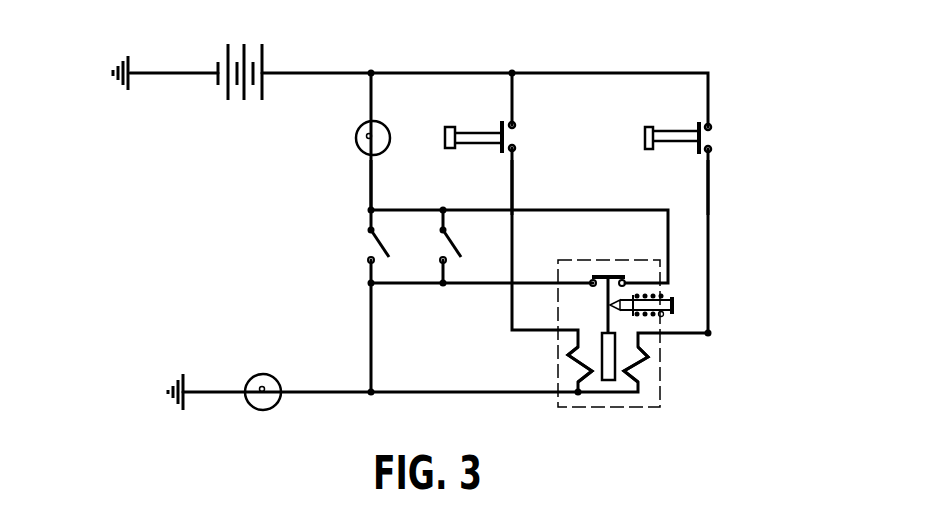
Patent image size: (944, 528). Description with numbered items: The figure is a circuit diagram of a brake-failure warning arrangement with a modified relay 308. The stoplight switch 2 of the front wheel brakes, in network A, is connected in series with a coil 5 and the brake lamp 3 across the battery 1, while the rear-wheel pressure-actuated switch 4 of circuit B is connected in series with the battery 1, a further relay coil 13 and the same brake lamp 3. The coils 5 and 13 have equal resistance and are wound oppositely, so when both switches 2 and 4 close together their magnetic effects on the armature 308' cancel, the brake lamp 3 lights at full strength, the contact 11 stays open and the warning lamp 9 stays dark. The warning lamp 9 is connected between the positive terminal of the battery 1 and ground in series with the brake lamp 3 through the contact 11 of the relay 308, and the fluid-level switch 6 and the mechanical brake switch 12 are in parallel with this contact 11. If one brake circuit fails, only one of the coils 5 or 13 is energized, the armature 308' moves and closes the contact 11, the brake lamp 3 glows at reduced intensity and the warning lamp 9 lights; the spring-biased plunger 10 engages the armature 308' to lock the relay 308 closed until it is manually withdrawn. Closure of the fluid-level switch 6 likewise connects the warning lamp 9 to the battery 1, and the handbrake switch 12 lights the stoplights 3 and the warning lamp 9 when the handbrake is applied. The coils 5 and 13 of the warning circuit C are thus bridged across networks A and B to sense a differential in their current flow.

The battery 1 is at (236, 108).
The stoplight switch 2 is at (517, 135).
The brake lamp 3 is at (262, 374).
The rear-wheel pressure-actuated switch 4 is at (712, 141).
The coil 5 is at (572, 362).
The fluid-level switch 6 is at (440, 257).
The warning lamp 9 is at (356, 146).
The spring-biased plunger 10 is at (672, 300).
The contact 11 is at (630, 282).
The mechanical brake switch 12 is at (367, 257).
The relay coil 13 is at (648, 369).
The relay 308 is at (612, 362).
The armature 308' is at (594, 395).
The network A is at (513, 190).
The network B is at (710, 186).
The warning circuit C is at (368, 183).